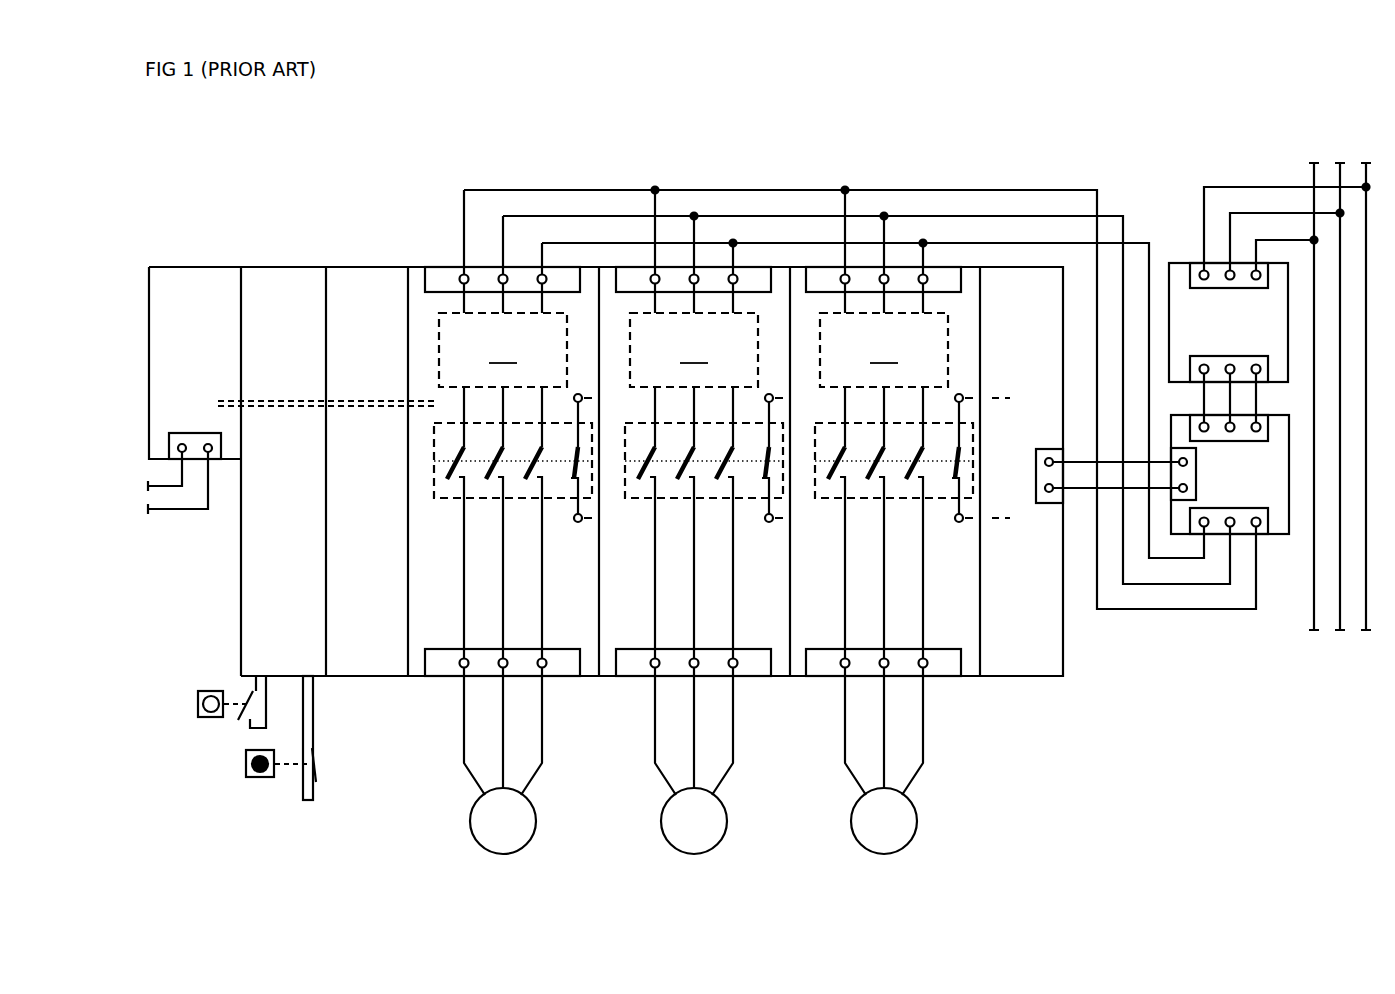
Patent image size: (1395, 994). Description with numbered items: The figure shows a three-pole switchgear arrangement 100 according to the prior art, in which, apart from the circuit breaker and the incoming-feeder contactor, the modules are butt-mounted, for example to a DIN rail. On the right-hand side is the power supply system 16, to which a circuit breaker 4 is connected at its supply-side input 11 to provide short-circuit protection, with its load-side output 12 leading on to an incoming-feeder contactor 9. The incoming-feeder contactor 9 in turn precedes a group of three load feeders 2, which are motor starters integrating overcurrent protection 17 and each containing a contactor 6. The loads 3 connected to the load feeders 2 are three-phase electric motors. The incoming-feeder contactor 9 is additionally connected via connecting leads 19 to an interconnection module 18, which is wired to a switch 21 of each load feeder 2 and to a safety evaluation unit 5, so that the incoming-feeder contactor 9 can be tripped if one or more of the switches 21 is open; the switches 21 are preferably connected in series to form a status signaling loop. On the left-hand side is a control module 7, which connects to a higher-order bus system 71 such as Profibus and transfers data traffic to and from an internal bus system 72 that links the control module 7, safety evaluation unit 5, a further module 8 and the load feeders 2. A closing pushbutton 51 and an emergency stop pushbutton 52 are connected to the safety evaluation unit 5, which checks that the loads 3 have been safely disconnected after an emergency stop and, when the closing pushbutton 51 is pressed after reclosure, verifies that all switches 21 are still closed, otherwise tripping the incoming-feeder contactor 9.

The switchgear arrangement 100 is at (241, 166).
The control module 7 is at (192, 189).
The safety evaluation unit 5 is at (286, 189).
The module 8 is at (373, 189).
The higher-order bus system 71 is at (167, 495).
The internal bus system 72 is at (288, 407).
The closing pushbutton 51 is at (212, 719).
The emergency stop pushbutton 52 is at (263, 782).
The load feeder 2 is at (588, 660).
The overcurrent protection 17 is at (693, 350).
The contactor 6 is at (562, 500).
The switch 21 is at (580, 455).
The load 3 is at (537, 820).
The interconnection module 18 is at (1025, 660).
The connecting leads 19 is at (1078, 480).
The circuit breaker 4 is at (1181, 272).
The load-side output 12 is at (1214, 365).
The supply-side input 11 is at (1252, 280).
The incoming-feeder contactor 9 is at (1280, 520).
The power supply system 16 is at (1326, 178).